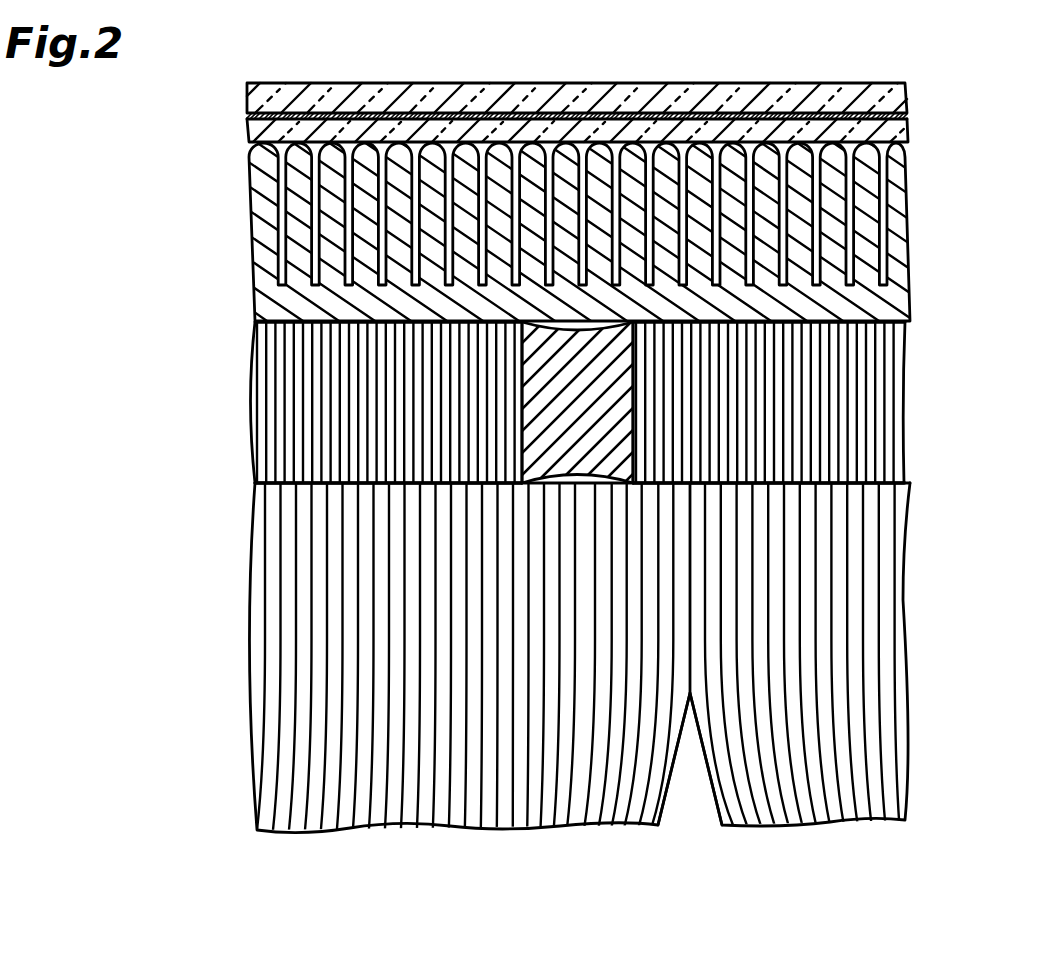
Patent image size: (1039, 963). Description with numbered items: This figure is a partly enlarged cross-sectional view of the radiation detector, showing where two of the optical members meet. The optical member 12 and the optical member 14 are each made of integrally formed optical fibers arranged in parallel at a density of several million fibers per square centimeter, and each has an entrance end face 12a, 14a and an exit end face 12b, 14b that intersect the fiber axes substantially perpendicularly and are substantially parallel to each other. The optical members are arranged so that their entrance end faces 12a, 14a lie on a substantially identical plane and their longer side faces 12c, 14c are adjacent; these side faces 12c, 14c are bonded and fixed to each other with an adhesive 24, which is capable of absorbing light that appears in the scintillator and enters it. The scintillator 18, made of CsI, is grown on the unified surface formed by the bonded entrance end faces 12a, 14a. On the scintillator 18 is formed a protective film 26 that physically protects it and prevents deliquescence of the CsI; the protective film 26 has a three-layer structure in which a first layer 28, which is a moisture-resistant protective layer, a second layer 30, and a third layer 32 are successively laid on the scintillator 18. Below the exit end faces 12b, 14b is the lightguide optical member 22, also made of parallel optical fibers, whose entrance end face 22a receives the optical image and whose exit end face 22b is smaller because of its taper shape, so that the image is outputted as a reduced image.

The optical member 12 is at (266, 380).
The entrance end face 12a is at (262, 323).
The exit end face 12b is at (262, 489).
The longer side face 12c is at (523, 330).
The optical member 14 is at (896, 374).
The entrance end face 14a is at (902, 322).
The exit end face 14b is at (883, 486).
The longer side face 14c is at (632, 330).
The scintillator 18 is at (907, 243).
The lightguide optical member 22 is at (889, 612).
The entrance end face 22a is at (882, 482).
The exit end face 22b is at (871, 819).
The adhesive 24 is at (578, 350).
The protective film 26 is at (641, 129).
The first layer 28 is at (611, 147).
The second layer 30 is at (899, 117).
The third layer 32 is at (897, 92).